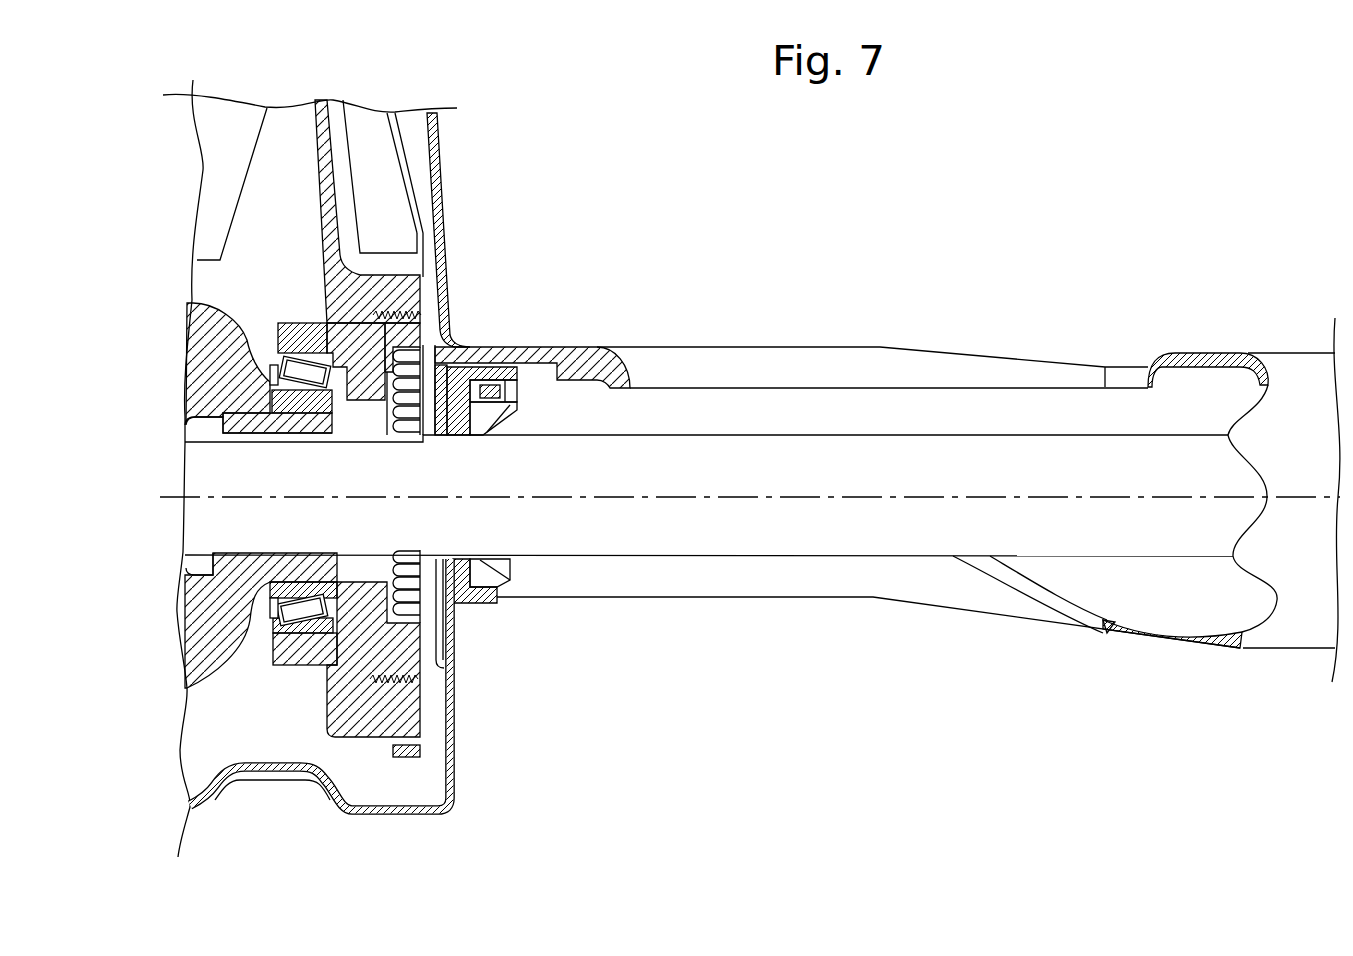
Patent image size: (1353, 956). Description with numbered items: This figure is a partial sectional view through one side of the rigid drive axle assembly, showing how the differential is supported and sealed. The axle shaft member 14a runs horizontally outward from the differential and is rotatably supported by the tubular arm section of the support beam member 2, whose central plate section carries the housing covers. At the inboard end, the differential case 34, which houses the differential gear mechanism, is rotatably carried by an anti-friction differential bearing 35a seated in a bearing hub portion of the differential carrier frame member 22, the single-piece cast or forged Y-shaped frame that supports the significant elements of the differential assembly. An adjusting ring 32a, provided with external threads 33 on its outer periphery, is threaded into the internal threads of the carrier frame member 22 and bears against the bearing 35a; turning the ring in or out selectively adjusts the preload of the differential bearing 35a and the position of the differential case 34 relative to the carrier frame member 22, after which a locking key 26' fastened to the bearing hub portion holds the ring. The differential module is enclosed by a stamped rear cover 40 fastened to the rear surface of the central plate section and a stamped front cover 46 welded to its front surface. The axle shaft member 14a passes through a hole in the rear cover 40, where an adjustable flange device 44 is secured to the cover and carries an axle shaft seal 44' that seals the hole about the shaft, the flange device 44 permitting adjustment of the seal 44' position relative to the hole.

The support beam member 2 is at (570, 342).
The axle shaft member 14a is at (580, 535).
The differential carrier frame member 22 is at (379, 275).
The locking key 26' is at (458, 684).
The adjusting ring 32a is at (305, 668).
The external threads 33 is at (393, 740).
The differential case 34 is at (224, 311).
The differential bearing 35a is at (268, 628).
The rear cover 40 is at (385, 826).
The adjustable flange device 44 is at (482, 538).
The axle shaft seal 44' is at (516, 555).
The front cover 46 is at (442, 161).